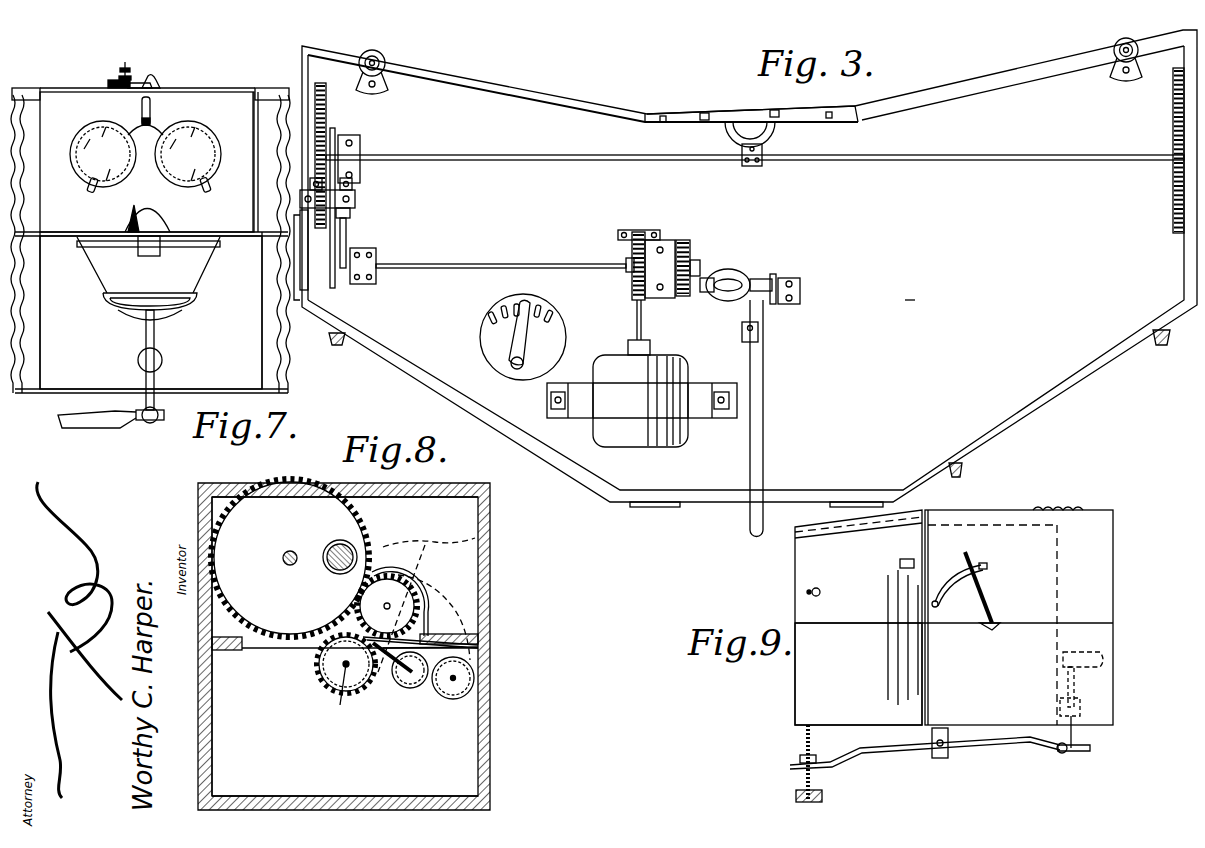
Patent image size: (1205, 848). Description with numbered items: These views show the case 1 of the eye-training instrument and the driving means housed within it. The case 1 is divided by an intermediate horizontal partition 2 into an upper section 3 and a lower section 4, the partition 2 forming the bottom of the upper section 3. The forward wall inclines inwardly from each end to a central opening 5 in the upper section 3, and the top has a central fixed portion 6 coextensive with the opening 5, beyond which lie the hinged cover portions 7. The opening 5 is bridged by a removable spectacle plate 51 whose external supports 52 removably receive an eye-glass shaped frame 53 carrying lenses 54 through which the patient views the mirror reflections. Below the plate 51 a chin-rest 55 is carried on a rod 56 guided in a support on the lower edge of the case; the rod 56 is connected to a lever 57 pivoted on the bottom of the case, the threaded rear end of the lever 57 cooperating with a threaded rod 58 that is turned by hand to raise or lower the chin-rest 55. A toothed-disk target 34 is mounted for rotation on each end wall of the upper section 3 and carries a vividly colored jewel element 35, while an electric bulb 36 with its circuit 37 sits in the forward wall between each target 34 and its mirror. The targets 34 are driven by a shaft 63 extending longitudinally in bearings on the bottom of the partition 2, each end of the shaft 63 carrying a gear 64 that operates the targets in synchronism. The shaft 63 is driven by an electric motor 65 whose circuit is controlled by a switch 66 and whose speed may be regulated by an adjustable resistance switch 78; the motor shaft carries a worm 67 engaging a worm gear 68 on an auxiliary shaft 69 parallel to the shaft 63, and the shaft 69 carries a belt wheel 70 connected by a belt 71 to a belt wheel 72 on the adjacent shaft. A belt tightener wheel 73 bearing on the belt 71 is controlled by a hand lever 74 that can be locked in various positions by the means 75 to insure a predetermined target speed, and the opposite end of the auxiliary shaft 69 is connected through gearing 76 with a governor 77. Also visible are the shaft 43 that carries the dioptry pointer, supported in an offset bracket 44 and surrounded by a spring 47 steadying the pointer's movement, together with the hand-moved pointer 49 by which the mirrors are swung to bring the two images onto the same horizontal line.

In FIG. 3, the case 1 is at (1050, 407).
In FIG. 7, the case 1 is at (151, 242).
In FIG. 8, the case 1 is at (492, 535).
In FIG. 9, the case 1 is at (797, 563).
In FIG. 3, the intermediate horizontal partition 2 is at (911, 290).
In FIG. 8, the intermediate horizontal partition 2 is at (232, 655).
In FIG. 3, the upper section 3 is at (1108, 365).
In FIG. 7, the upper section 3 is at (151, 218).
In FIG. 8, the upper section 3 is at (450, 492).
In FIG. 9, the upper section 3 is at (798, 578).
In FIG. 7, the lower section 4 is at (151, 312).
In FIG. 8, the lower section 4 is at (480, 745).
In FIG. 9, the lower section 4 is at (805, 688).
In FIG. 3, the central opening 5 is at (850, 108).
In FIG. 7, the central fixed portion 6 is at (262, 88).
In FIG. 7, the hinged cover portions 7 is at (22, 88).
In FIG. 8, the hinged cover portions 7 is at (228, 490).
In FIG. 8, the target 34 is at (306, 486).
In FIG. 8, the jewel element 35 is at (340, 540).
In FIG. 3, the electric bulb 36 is at (370, 48).
In FIG. 3, the circuit 37 is at (749, 82).
In FIG. 7, the shaft 43 is at (130, 62).
In FIG. 7, the offset bracket 44 is at (108, 78).
In FIG. 7, the spring 47 is at (145, 82).
In FIG. 7, the pointer 49 is at (160, 80).
In FIG. 3, the removable spectacle plate 51 is at (666, 114).
In FIG. 7, the removable spectacle plate 51 is at (228, 100).
In FIG. 3, the external supports 52 is at (704, 113).
In FIG. 7, the external supports 52 is at (152, 105).
In FIG. 7, the frame 53 is at (147, 160).
In FIG. 7, the lenses 54 is at (80, 165).
In FIG. 7, the chin-rest 55 is at (175, 315).
In FIG. 9, the chin-rest 55 is at (1110, 660).
In FIG. 7, the rod 56 is at (158, 378).
In FIG. 9, the rod 56 is at (1092, 743).
In FIG. 7, the lever 57 is at (112, 428).
In FIG. 9, the lever 57 is at (1005, 760).
In FIG. 9, the threaded rod 58 is at (790, 757).
In FIG. 3, the shaft 63 is at (540, 161).
In FIG. 7, the shaft 63 is at (100, 250).
In FIG. 8, the shaft 63 is at (341, 695).
In FIG. 3, the gear 64 is at (327, 128).
In FIG. 8, the gear 64 is at (328, 692).
In FIG. 3, the electric motor 65 is at (680, 350).
In FIG. 3, the switch 66 is at (550, 474).
In FIG. 9, the switch 66 is at (830, 578).
In FIG. 3, the worm 67 is at (632, 286).
In FIG. 3, the worm gear 68 is at (622, 248).
In FIG. 3, the auxiliary shaft 69 is at (518, 262).
In FIG. 8, the auxiliary shaft 69 is at (453, 679).
In FIG. 3, the belt wheel 70 is at (350, 240).
In FIG. 8, the belt wheel 70 is at (412, 688).
In FIG. 3, the belt 71 is at (352, 215).
In FIG. 8, the belt 71 is at (385, 670).
In FIG. 3, the belt wheel 72 is at (361, 138).
In FIG. 8, the belt wheel 72 is at (345, 672).
In FIG. 3, the belt tightener wheel 73 is at (358, 196).
In FIG. 8, the belt tightener wheel 73 is at (408, 690).
In FIG. 3, the hand lever 74 is at (300, 242).
In FIG. 8, the hand lever 74 is at (436, 548).
In FIG. 9, the hand lever 74 is at (988, 592).
In FIG. 3, the locking means 75 is at (296, 277).
In FIG. 8, the locking means 75 is at (456, 578).
In FIG. 9, the locking means 75 is at (950, 576).
In FIG. 3, the gearing 76 is at (690, 247).
In FIG. 3, the governor 77 is at (735, 276).
In FIG. 3, the adjustable resistance switch 78 is at (496, 338).